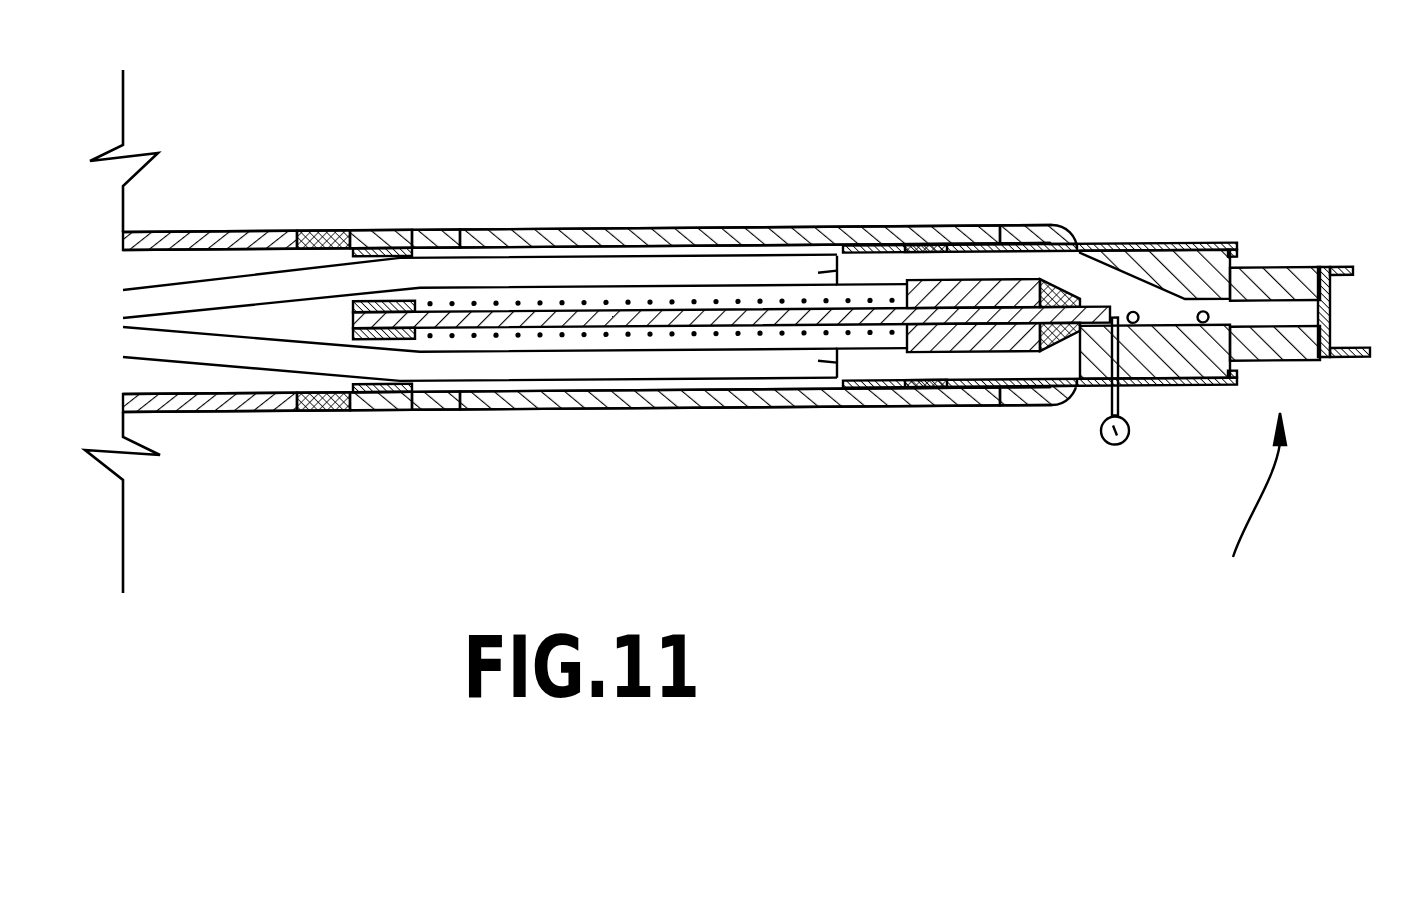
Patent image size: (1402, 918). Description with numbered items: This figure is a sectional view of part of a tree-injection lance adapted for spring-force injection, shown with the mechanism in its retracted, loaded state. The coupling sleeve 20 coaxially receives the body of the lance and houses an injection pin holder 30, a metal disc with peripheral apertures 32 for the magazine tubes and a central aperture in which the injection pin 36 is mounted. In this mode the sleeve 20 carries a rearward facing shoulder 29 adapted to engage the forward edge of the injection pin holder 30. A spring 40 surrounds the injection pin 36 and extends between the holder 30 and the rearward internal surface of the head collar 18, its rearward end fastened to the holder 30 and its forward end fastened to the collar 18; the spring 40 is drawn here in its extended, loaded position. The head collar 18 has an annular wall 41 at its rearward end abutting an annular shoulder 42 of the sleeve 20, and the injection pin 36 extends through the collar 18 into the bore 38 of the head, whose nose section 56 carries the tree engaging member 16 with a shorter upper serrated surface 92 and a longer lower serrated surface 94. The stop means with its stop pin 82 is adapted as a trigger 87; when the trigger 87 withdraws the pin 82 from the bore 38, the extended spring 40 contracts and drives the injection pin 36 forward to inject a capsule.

The tree engaging member 16 is at (1249, 510).
The head collar 18 is at (1023, 407).
The coupling sleeve 20 is at (560, 412).
The rearward facing shoulder 29 is at (443, 250).
The injection pin holder 30 is at (382, 250).
The apertures 32 is at (318, 290).
The injection pin 36 is at (668, 318).
The bore 38 is at (1170, 305).
The spring 40 is at (692, 307).
The annular wall 41 is at (925, 243).
The annular shoulder 42 is at (958, 244).
The nose section 56 is at (1280, 267).
The stop pin 82 is at (1127, 310).
The trigger 87 is at (1115, 444).
The upper serrated tree engaging surface 92 is at (1340, 268).
The lower serrated tree engaging surface 94 is at (1342, 357).